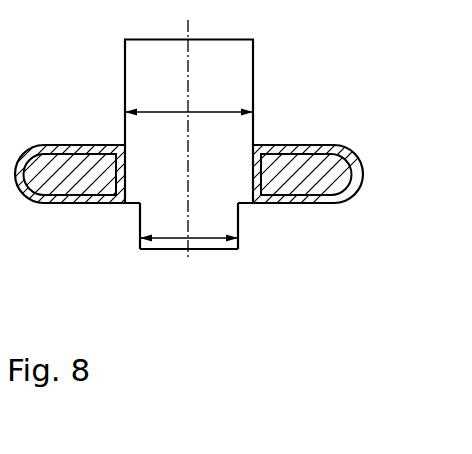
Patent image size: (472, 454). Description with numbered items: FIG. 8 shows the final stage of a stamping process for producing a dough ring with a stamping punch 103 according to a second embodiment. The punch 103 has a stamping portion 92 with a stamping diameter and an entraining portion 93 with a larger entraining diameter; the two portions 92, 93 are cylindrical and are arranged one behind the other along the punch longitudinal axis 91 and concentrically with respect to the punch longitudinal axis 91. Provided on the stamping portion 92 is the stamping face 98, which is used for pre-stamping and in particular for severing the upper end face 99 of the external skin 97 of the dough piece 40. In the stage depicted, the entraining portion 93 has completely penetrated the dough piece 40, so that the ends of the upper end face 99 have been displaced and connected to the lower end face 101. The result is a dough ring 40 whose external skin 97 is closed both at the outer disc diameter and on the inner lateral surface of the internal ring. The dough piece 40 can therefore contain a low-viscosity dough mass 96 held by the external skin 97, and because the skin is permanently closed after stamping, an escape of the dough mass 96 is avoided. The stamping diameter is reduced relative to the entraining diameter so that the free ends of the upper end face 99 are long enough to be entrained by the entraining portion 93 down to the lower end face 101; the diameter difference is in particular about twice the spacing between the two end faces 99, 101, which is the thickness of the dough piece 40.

The dough piece 40 is at (319, 224).
The punch longitudinal axis 91 is at (190, 62).
The stamping portion 92 is at (203, 250).
The entraining portion 93 is at (159, 44).
The low-viscosity dough mass 96 is at (338, 150).
The external skin 97 is at (287, 154).
The stamping face 98 is at (160, 250).
The upper end face 99 is at (101, 138).
The lower end face 101 is at (79, 211).
The stamping punch 103 is at (282, 60).